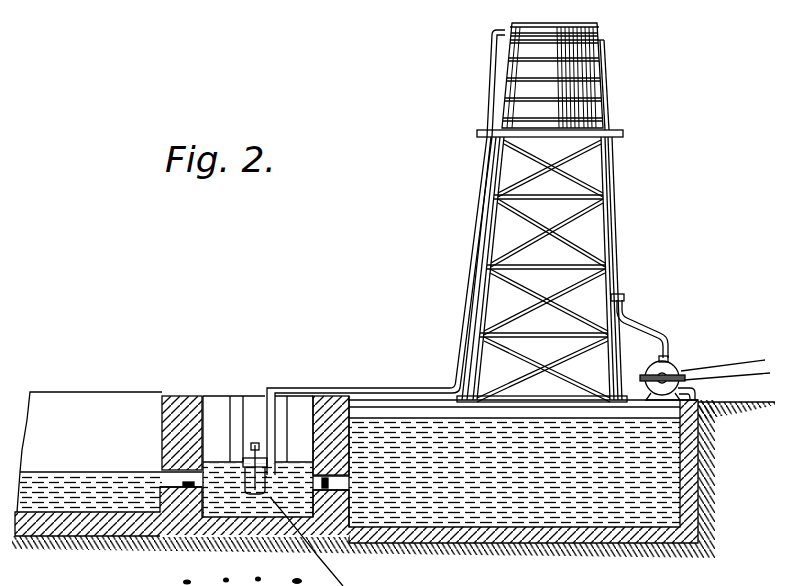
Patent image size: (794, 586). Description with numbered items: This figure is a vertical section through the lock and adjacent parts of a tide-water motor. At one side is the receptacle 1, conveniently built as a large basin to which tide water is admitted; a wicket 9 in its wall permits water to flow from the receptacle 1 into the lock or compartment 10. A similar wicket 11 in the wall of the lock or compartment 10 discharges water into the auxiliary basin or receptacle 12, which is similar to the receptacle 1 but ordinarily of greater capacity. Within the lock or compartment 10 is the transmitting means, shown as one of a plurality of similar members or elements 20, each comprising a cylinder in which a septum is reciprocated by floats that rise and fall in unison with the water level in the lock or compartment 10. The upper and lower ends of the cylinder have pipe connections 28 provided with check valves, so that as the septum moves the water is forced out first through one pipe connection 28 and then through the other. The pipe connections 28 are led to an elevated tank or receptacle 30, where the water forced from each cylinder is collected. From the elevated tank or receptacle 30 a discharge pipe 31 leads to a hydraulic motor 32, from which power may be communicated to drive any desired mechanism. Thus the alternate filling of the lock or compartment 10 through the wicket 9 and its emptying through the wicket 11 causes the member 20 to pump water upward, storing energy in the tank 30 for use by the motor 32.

The receptacle 1 is at (470, 498).
The wicket 9 is at (343, 482).
The lock or compartment 10 is at (218, 405).
The wicket 11 is at (160, 480).
The auxiliary basin or receptacle 12 is at (89, 452).
The transmitting member 20 is at (255, 447).
The pipe connection 28 is at (388, 388).
The elevated tank or receptacle 30 is at (598, 70).
The discharge pipe 31 is at (618, 268).
The hydraulic motor 32 is at (668, 366).